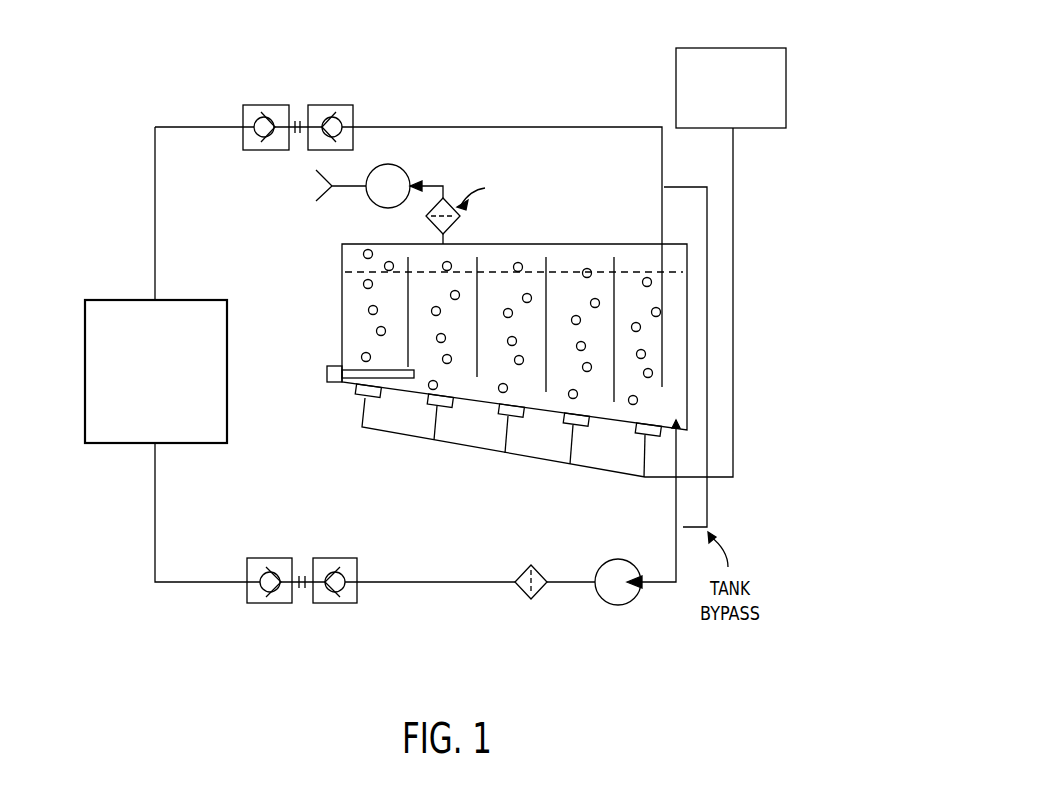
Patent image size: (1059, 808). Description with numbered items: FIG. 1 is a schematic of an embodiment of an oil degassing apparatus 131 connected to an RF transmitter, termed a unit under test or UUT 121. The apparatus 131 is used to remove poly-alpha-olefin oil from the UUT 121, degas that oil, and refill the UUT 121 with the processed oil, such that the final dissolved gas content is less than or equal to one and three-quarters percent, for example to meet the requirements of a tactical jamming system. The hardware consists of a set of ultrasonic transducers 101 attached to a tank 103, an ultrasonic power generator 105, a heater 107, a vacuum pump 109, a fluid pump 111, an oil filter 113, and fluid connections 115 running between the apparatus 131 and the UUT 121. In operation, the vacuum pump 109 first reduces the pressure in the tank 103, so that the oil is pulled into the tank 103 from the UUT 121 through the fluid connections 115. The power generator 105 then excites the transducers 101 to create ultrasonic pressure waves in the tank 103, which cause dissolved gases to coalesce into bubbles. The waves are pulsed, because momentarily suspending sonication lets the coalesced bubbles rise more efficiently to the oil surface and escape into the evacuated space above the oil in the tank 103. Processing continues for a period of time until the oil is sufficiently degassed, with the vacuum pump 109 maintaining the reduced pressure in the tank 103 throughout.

The transducers 101 is at (360, 397).
The tank 103 is at (342, 262).
The ultrasonic power generator 105 is at (788, 58).
The heater 107 is at (327, 373).
The vacuum pump 109 is at (396, 165).
The fluid pump 111 is at (621, 605).
The oil filter 113 is at (538, 596).
The fluid connections 115 is at (483, 126).
The unit under test 121 is at (85, 368).
The oil degassing apparatus 131 is at (763, 232).